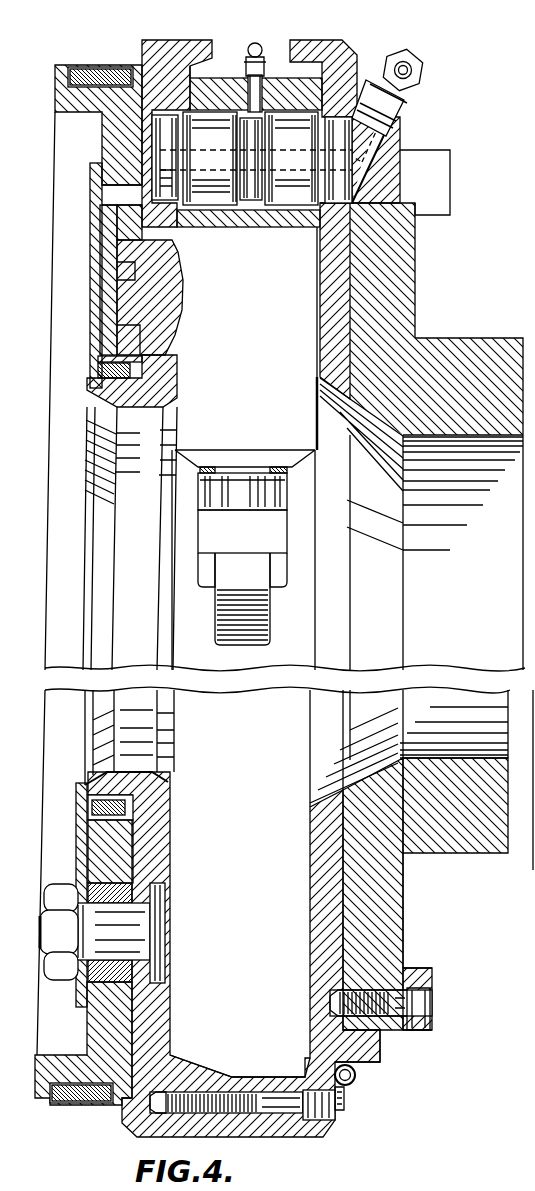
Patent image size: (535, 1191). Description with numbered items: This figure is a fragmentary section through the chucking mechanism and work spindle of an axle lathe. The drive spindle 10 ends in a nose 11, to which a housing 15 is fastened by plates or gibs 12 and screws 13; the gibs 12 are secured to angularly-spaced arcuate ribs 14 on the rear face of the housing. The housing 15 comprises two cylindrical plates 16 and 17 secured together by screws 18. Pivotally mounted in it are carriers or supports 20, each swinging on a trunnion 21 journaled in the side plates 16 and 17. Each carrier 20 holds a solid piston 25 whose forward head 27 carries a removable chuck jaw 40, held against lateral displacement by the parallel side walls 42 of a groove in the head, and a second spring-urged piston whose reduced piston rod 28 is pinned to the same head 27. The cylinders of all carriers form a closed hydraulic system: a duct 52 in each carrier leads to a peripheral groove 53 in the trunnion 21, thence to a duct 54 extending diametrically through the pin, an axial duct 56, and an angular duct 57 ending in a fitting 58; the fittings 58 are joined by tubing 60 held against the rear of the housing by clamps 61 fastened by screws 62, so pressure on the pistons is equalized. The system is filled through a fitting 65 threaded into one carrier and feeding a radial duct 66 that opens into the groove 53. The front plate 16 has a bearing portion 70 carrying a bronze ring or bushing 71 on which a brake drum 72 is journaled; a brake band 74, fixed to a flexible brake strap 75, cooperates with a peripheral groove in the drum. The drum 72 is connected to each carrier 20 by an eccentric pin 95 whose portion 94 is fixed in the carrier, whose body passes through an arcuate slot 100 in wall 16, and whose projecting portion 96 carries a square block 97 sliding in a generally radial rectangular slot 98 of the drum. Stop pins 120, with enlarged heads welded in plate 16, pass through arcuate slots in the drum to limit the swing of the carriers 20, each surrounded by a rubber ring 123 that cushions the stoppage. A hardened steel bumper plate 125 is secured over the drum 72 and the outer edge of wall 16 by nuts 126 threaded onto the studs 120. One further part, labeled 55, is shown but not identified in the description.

The drive spindle 10 is at (468, 352).
The nose 11 is at (400, 268).
The plates or gibs 12 is at (441, 192).
The screws 13 is at (427, 1010).
The arcuate ribs 14 is at (390, 131).
The housing 15 is at (240, 891).
The cylindrical plate 16 is at (178, 52).
The cylindrical plate 17 is at (329, 44).
The screws 18 is at (262, 1110).
The support 20 is at (290, 427).
The trunnion 21 is at (282, 227).
The piston 25 is at (207, 503).
The head 27 is at (272, 528).
The piston rod 28 is at (262, 492).
The chuck jaw 40 is at (266, 640).
The side walls 42 is at (206, 581).
The duct 52 is at (246, 228).
The peripheral groove 53 is at (242, 188).
The duct 54 is at (242, 131).
The lock ring 55 is at (192, 228).
The duct 56 is at (282, 151).
The angular duct 57 is at (364, 170).
The fitting 58 is at (424, 70).
The tubing 60 is at (356, 1075).
The clamps 61 is at (349, 1088).
The screws 62 is at (340, 1106).
The fitting 65 is at (256, 46).
The radial duct 66 is at (234, 93).
The bearing portion 70 is at (113, 422).
The bronze ring or bushing 71 is at (142, 812).
The brake drum 72 is at (118, 120).
The brake band 74 is at (93, 71).
The brake strap 75 is at (114, 70).
The portion 94 is at (186, 297).
The pin 95 is at (145, 360).
The projecting portion 96 is at (118, 298).
The square block 97 is at (129, 246).
The rectangular slot 98 is at (101, 191).
The arcuate slot 100 is at (146, 372).
The stop pins 120 is at (136, 941).
The rubber ring 123 is at (112, 886).
The hardened steel plate 125 is at (92, 206).
The nuts 126 is at (59, 972).